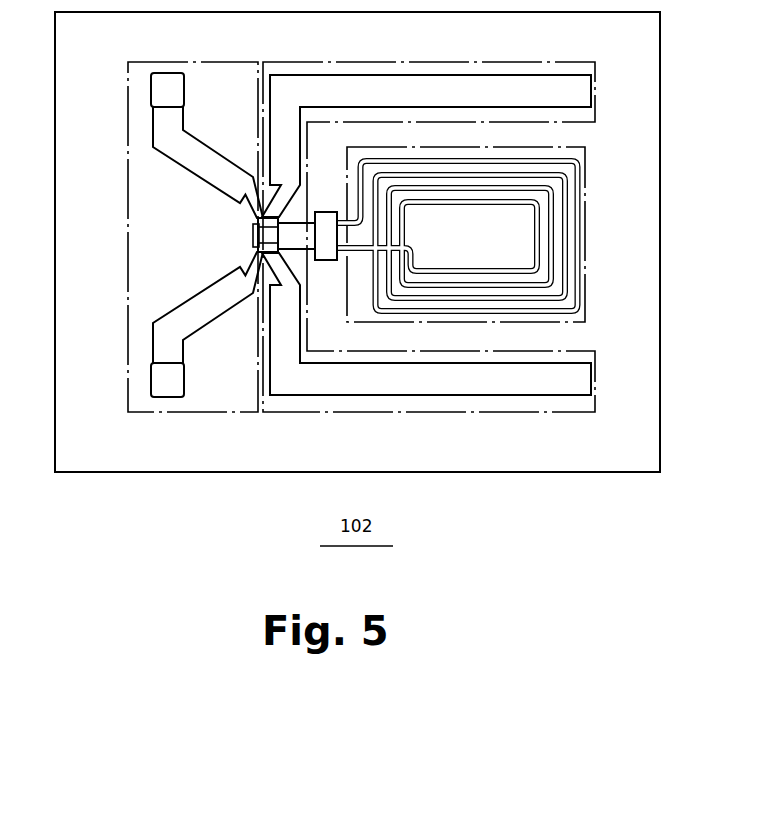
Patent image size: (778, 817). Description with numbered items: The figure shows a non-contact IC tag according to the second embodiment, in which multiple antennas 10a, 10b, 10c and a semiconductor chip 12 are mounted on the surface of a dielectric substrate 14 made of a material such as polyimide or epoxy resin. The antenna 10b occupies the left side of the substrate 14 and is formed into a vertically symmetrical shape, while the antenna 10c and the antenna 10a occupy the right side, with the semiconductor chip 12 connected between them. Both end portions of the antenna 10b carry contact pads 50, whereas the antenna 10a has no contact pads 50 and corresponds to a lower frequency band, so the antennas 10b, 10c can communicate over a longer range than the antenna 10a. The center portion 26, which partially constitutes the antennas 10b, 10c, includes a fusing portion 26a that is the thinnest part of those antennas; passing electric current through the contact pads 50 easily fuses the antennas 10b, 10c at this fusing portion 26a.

The substrate 14 is at (660, 72).
The antenna 10a is at (585, 185).
The antenna 10b is at (128, 227).
The antenna 10c is at (560, 62).
The semiconductor chip 12 is at (322, 262).
The center portion 26 is at (258, 219).
The fusing portion 26a is at (254, 237).
The contact pads 50 is at (187, 90).